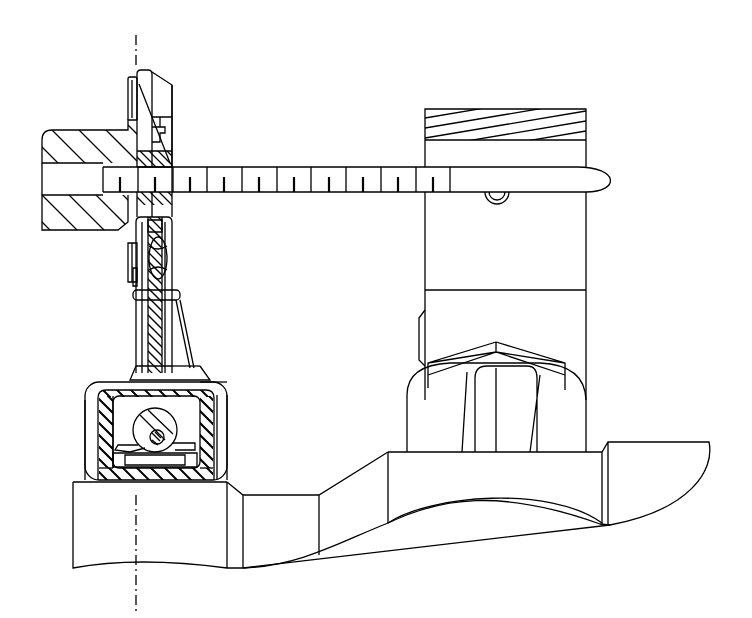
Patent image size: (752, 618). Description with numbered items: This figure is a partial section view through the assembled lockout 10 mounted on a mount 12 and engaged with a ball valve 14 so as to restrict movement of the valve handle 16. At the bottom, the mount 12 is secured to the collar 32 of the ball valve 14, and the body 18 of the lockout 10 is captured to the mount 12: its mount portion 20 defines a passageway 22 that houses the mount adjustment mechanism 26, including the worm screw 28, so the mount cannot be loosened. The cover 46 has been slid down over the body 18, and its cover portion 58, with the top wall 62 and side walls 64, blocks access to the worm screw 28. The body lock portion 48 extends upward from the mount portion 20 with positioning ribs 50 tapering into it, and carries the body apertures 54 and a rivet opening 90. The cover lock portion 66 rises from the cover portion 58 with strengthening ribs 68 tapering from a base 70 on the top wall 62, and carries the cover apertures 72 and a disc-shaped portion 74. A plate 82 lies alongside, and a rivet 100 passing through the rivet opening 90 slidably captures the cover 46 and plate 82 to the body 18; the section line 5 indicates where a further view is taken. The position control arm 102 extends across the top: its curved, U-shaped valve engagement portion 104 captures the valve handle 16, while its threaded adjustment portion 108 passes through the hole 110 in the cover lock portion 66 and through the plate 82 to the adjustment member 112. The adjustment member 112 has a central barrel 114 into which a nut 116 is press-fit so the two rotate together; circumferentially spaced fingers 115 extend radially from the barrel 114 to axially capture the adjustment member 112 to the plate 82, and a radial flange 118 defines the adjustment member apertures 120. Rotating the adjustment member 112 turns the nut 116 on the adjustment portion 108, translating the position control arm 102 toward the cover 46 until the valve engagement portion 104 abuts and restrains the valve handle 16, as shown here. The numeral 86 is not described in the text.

The section line 5- 5 is at (133, 43).
The lockout 10 is at (657, 84).
The mount 12 is at (152, 464).
The ball valve 14 is at (607, 440).
The valve handle 16 is at (563, 108).
The body 18 is at (110, 482).
The mount portion 20 is at (186, 484).
The passageway 22 is at (128, 410).
The mount adjustment mechanism 26 is at (182, 416).
The worm screw 28 is at (145, 460).
The collar 32 is at (73, 490).
The cover 46 is at (172, 82).
The body lock portion 48 is at (147, 338).
The positioning ribs 50 is at (137, 365).
The body apertures 54 is at (168, 246).
The cover portion 58 is at (178, 425).
The top wall 62 is at (226, 380).
The side walls 64 is at (84, 424).
The cover lock portion 66 is at (177, 138).
The strengthening ribs 68 is at (188, 352).
The base 70 is at (186, 370).
The cover apertures 72 is at (172, 262).
The disc-shaped portion 74 is at (147, 66).
The plate 82 is at (134, 318).
The sleeve stop 86 is at (136, 272).
The rivet opening 90 is at (173, 323).
The rivet 100 is at (181, 294).
The position control arm 102 is at (344, 150).
The valve engagement portion 104 is at (608, 184).
The adjustment portion 108 is at (292, 166).
The hole 110 is at (170, 161).
The adjustment member 112 is at (43, 128).
The central barrel 114 is at (40, 212).
The fingers 115 is at (172, 118).
The nut 116 is at (118, 142).
The radial flange 118 is at (129, 77).
The adjustment member apertures 120 is at (128, 250).